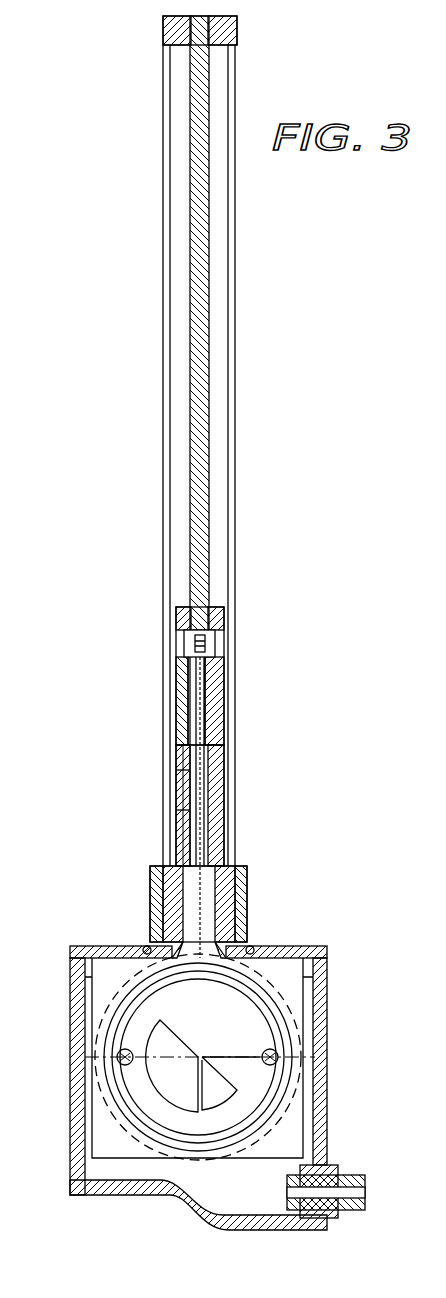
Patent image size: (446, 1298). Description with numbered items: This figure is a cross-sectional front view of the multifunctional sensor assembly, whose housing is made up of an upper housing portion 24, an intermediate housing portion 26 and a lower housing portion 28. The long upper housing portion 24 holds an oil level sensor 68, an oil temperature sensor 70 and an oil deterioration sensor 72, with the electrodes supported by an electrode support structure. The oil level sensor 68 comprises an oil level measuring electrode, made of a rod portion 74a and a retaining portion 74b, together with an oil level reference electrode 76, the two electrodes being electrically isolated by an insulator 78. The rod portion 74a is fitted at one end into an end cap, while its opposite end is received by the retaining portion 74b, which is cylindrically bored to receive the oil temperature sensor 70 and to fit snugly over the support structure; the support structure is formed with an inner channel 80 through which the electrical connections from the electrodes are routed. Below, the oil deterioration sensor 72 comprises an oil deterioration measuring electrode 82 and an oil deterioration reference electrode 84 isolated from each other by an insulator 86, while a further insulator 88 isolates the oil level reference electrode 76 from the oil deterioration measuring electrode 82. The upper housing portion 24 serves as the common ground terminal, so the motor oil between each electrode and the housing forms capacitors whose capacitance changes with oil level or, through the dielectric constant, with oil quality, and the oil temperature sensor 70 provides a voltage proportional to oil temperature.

The upper housing portion 24 is at (237, 25).
The intermediate housing portion 26 is at (238, 908).
The lower housing portion 28 is at (325, 1032).
The oil level sensor 68 is at (248, 748).
The oil temperature sensor 70 is at (207, 642).
The oil deterioration sensor 72 is at (252, 763).
The rod portion 74a is at (190, 272).
The retaining portion 74b is at (172, 608).
The oil level reference electrode 76 is at (180, 672).
The insulator 78 is at (178, 650).
The inner channel 80 is at (180, 692).
The oil deterioration measuring electrode 82 is at (170, 790).
The oil deterioration reference electrode 84 is at (175, 853).
The insulator 86 is at (173, 847).
The insulator 88 is at (170, 760).